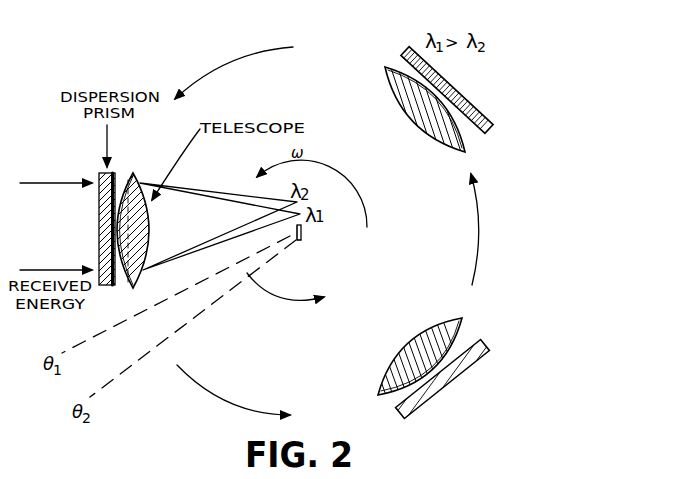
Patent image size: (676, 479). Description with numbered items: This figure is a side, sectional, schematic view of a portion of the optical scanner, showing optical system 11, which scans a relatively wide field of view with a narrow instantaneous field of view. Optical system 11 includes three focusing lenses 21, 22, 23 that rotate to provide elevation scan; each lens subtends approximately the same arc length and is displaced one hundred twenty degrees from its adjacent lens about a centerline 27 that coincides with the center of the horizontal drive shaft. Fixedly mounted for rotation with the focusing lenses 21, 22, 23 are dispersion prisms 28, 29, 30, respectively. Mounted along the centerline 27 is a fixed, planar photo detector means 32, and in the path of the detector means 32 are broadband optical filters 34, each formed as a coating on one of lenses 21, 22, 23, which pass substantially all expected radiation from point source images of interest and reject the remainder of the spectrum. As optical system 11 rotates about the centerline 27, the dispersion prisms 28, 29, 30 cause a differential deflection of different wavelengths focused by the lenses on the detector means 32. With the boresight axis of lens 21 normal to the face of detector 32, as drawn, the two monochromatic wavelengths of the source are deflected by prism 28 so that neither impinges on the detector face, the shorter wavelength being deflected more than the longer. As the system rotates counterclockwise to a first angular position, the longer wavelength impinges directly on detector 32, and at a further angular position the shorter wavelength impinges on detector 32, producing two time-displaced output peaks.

The optical system 11 is at (196, 57).
The focusing lens 21 is at (146, 220).
The focusing lens 22 is at (397, 88).
The focusing lens 23 is at (398, 375).
The centerline 27 is at (302, 233).
The dispersion prism 28 is at (99, 213).
The dispersion prism 29 is at (465, 100).
The dispersion prism 30 is at (448, 377).
The photo detector means 32 is at (302, 240).
The broadband optical filter 34 is at (146, 192).